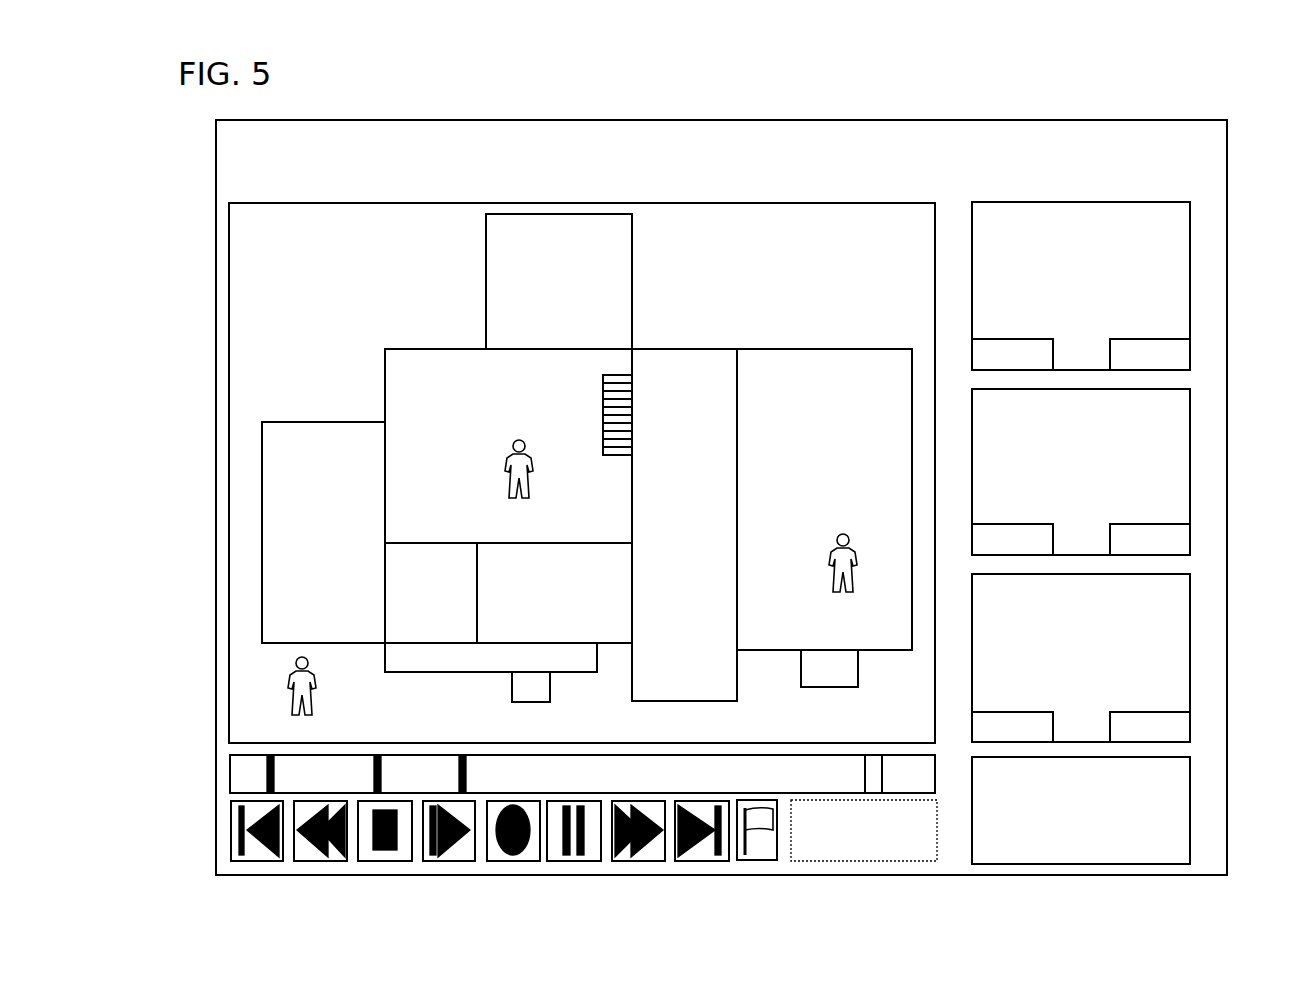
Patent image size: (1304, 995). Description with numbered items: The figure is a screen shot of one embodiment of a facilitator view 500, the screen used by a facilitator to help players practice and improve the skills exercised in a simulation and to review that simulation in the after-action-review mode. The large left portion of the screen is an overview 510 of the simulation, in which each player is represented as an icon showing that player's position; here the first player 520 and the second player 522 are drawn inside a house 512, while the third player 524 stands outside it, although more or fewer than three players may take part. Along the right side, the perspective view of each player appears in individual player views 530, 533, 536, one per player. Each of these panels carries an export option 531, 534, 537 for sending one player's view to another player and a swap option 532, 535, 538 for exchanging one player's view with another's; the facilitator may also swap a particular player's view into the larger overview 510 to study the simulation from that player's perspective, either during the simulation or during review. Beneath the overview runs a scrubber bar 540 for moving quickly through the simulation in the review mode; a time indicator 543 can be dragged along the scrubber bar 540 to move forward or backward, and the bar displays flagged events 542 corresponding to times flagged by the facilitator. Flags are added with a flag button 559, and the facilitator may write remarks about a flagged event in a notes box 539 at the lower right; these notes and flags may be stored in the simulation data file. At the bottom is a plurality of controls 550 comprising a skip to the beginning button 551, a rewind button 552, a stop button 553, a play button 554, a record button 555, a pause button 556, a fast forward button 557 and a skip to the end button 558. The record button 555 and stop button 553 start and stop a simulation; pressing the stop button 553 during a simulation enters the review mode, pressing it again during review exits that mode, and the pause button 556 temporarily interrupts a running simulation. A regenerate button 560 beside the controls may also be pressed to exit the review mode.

The facilitator view 500 is at (720, 120).
The overview 510 is at (583, 202).
The house 512 is at (385, 348).
The player 1 520 is at (830, 556).
The player 2 522 is at (505, 460).
The player 3 524 is at (316, 683).
The individual player view 530 is at (1190, 287).
The export option 531 is at (1013, 339).
The swap option 532 is at (1190, 355).
The individual player view 533 is at (1190, 472).
The export option 534 is at (1013, 524).
The swap option 535 is at (1190, 540).
The individual player view 536 is at (1190, 656).
The export option 537 is at (1013, 712).
The swap option 538 is at (1190, 724).
The notes box 539 is at (1192, 812).
The scrubber bar 540 is at (230, 757).
The flagged events 542 is at (268, 773).
The time indicator 543 is at (882, 770).
The plurality of controls 550 is at (220, 825).
The skip to the beginning button 551 is at (258, 862).
The rewind button 552 is at (324, 862).
The stop button 553 is at (385, 862).
The play button 554 is at (451, 862).
The record button 555 is at (513, 862).
The pause button 556 is at (573, 862).
The fast forward button 557 is at (640, 862).
The skip to the end button 558 is at (704, 862).
The flag button 559 is at (760, 862).
The regenerate button 560 is at (865, 862).